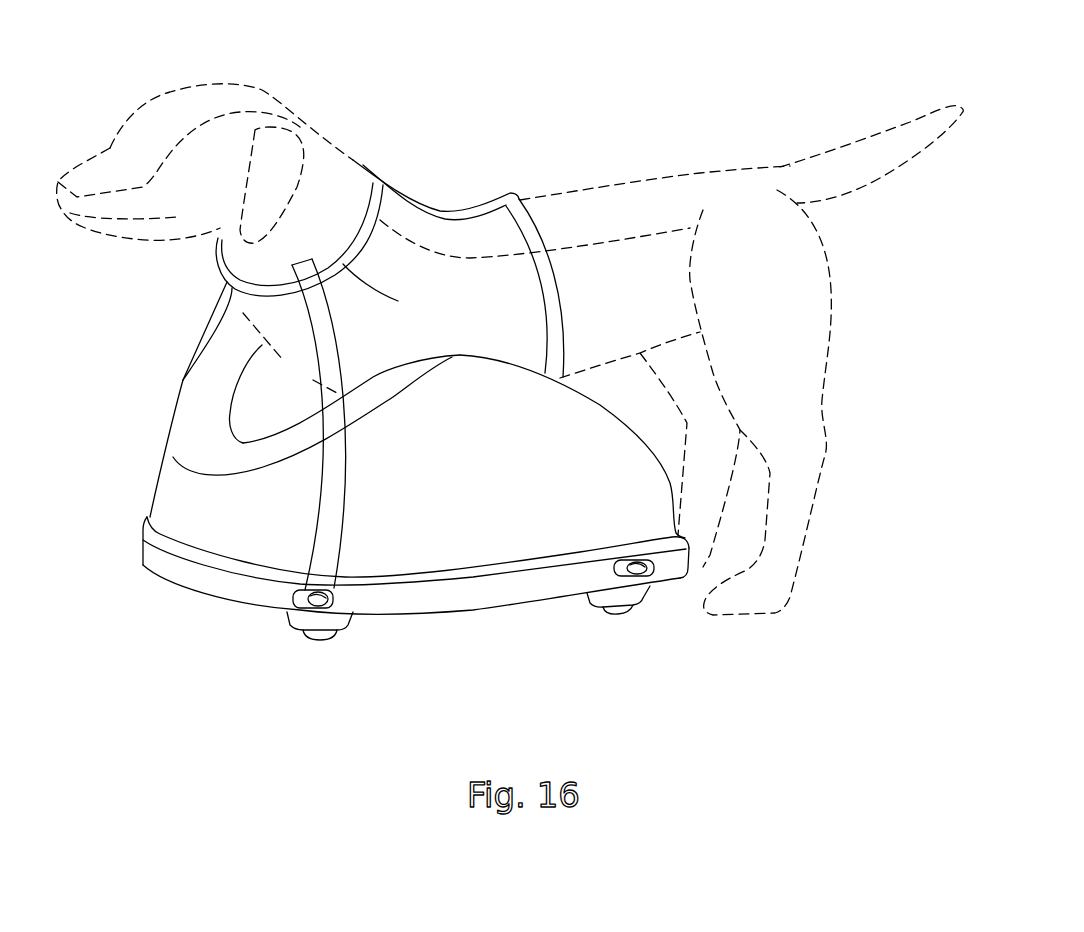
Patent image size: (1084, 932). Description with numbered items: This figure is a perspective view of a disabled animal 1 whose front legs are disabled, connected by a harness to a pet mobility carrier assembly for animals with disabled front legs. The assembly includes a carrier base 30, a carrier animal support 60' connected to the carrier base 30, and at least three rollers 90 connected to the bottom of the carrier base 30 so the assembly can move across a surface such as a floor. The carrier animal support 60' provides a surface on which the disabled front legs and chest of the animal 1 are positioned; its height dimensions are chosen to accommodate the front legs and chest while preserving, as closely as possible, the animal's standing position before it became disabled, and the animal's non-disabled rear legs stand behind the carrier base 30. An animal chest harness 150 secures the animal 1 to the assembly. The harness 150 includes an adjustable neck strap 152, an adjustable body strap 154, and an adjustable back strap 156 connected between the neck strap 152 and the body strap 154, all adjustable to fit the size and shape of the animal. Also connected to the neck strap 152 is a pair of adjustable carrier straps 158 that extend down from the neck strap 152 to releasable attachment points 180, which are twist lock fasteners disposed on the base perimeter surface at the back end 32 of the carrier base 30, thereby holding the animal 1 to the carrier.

The animal 1 is at (253, 97).
The animal chest harness 150 is at (220, 270).
The adjustable neck strap 152 is at (398, 301).
The adjustable body strap 154 is at (567, 290).
The adjustable back strap 156 is at (449, 208).
The carrier straps 158 is at (203, 330).
The carrier animal support 60' is at (362, 441).
The carrier base 30 is at (455, 603).
The back end 32 is at (130, 583).
The releasable attachment points 180 is at (310, 605).
The rollers 90 is at (620, 612).